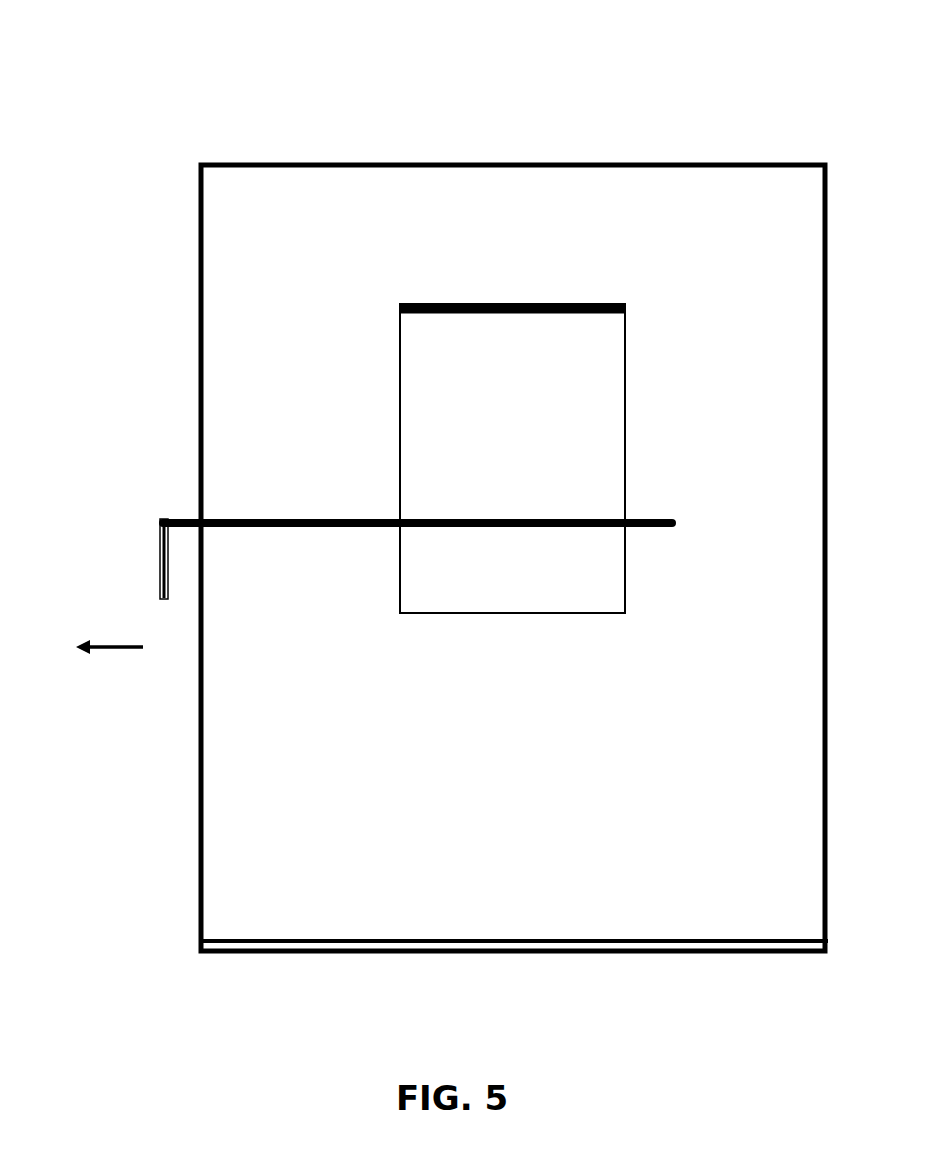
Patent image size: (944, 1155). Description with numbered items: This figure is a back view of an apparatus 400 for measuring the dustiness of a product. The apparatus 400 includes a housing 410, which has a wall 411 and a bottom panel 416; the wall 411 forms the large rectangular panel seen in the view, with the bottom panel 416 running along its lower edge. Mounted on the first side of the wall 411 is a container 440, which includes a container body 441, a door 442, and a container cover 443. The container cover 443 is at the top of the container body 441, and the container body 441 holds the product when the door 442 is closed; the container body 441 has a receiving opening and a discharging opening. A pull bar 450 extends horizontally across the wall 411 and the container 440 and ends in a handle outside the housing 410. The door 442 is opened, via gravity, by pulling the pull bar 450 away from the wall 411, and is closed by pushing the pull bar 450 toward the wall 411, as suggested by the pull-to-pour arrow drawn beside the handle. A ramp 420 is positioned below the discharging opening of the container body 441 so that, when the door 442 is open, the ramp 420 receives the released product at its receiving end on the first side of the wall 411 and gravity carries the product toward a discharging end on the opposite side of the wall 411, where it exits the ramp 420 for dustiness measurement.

The apparatus 400 is at (474, 38).
The housing 410 is at (239, 135).
The wall 411 is at (488, 228).
The bottom panel 416 is at (670, 950).
The ramp 420 is at (522, 647).
The container 440 is at (373, 340).
The container body 441 is at (488, 431).
The door 442 is at (638, 518).
The container cover 443 is at (586, 303).
The pull bar 450 is at (163, 560).